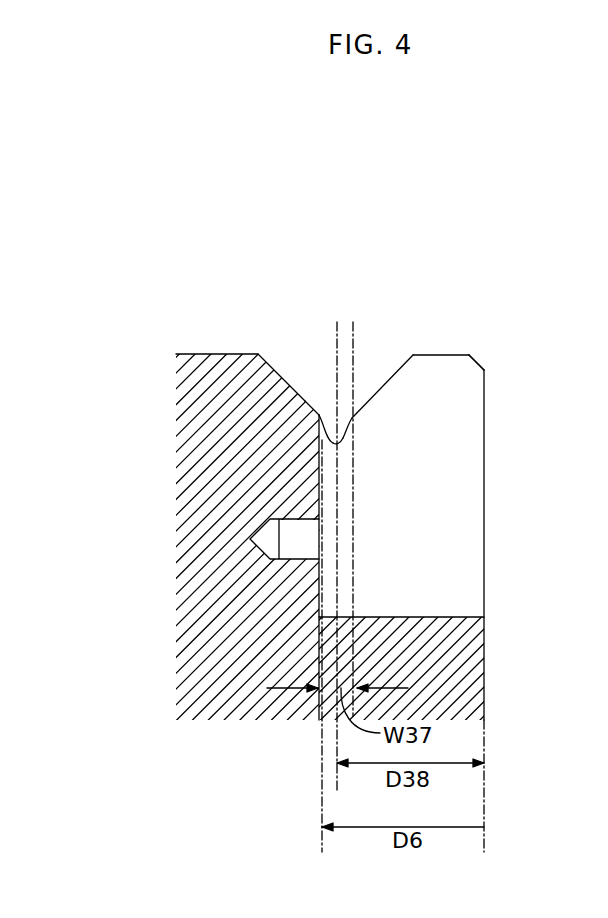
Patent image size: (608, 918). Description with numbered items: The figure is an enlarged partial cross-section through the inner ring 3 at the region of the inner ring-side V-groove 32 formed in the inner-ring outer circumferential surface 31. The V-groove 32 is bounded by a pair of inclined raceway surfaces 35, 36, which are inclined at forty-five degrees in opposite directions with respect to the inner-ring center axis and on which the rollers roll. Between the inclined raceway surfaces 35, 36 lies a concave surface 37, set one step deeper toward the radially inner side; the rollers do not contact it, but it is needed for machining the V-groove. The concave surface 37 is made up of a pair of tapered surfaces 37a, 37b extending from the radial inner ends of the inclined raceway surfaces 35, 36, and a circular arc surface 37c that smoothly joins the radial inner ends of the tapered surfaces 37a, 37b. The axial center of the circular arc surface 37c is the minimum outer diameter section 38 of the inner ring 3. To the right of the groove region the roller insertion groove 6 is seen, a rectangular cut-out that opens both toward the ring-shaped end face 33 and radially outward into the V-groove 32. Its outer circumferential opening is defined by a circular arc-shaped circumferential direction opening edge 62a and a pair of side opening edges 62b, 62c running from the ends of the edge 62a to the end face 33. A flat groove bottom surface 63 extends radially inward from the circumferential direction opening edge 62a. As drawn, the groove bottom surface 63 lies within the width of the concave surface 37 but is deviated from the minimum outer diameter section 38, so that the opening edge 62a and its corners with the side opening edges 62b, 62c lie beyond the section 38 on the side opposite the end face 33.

The inner ring 3 is at (122, 333).
The inner-ring outer circumferential surface 31 is at (216, 348).
The inner ring-side V-groove 32 is at (452, 235).
The ring-shaped end face 33 is at (486, 650).
The inclined raceway surface 35 is at (281, 384).
The inclined raceway surface 36 is at (392, 375).
The concave surface 37 is at (353, 417).
The tapered surface 37a is at (330, 436).
The tapered surface 37b is at (352, 422).
The circular arc surface 37c is at (339, 444).
The minimum outer diameter section 38 is at (340, 420).
The roller insertion groove 6 is at (441, 459).
The circumferential direction opening edge 62a is at (322, 418).
The side opening edge 62b is at (526, 348).
The side opening edge 62c is at (436, 358).
The groove bottom surface 63 is at (320, 485).